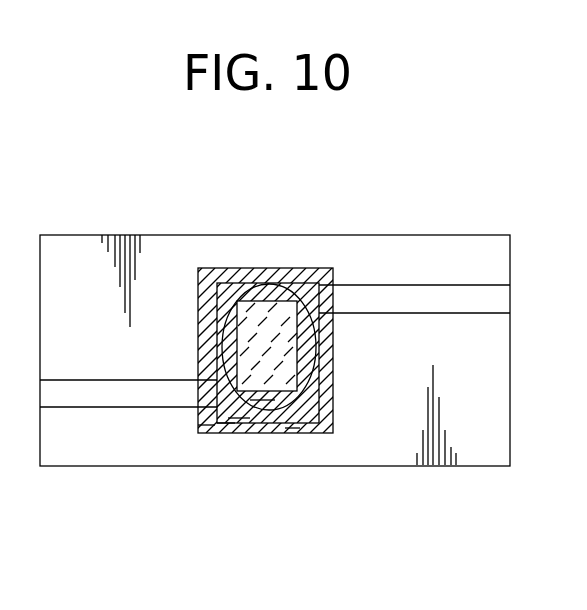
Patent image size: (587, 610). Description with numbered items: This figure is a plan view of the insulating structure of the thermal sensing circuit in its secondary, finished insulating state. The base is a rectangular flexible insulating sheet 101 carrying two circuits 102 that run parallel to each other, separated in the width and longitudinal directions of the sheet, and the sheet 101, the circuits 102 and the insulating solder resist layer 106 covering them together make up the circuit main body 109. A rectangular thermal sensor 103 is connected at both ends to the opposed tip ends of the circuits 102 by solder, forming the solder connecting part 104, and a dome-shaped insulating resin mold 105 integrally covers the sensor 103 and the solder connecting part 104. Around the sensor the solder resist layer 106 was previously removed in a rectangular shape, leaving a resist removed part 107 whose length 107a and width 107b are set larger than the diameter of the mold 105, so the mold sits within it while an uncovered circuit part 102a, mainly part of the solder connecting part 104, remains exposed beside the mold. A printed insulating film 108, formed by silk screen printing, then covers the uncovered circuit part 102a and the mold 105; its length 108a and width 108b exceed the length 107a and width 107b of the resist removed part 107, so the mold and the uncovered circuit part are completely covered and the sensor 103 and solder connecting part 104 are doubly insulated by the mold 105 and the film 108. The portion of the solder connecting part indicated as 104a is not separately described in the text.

The flexible insulating sheet 101 is at (468, 235).
The circuits 102 is at (70, 400).
The uncovered circuit part 102a is at (222, 295).
The thermal sensor 103 is at (268, 305).
The solder connecting part 104 is at (283, 290).
The bonding layer portion 104a is at (260, 400).
The insulating resin mold 105 is at (198, 268).
The solder resist layer 106 is at (450, 257).
The resist removed part 107 is at (325, 405).
The length of the resist removed part 107a is at (243, 416).
The width of the resist removed part 107b is at (228, 423).
The printed insulating film 108 is at (335, 268).
The length of the printed insulating film 108a is at (290, 425).
The width of the printed insulating film 108b is at (207, 422).
The circuit main body 109 is at (78, 232).